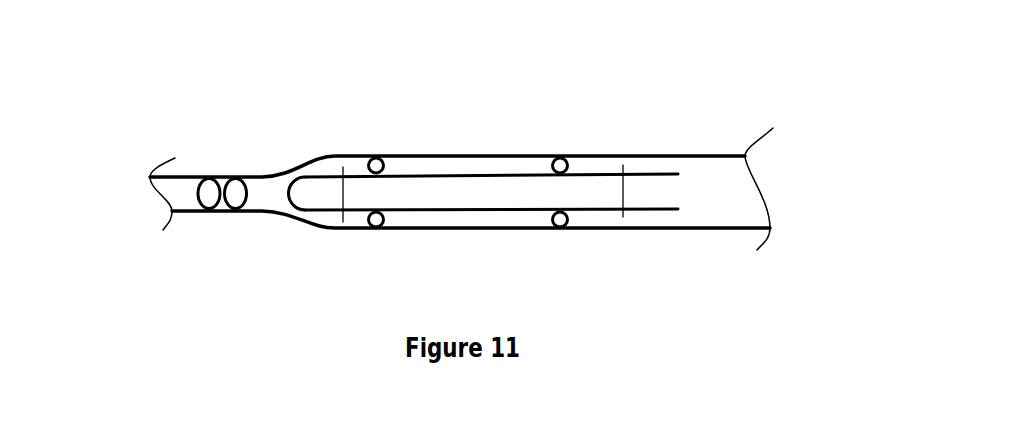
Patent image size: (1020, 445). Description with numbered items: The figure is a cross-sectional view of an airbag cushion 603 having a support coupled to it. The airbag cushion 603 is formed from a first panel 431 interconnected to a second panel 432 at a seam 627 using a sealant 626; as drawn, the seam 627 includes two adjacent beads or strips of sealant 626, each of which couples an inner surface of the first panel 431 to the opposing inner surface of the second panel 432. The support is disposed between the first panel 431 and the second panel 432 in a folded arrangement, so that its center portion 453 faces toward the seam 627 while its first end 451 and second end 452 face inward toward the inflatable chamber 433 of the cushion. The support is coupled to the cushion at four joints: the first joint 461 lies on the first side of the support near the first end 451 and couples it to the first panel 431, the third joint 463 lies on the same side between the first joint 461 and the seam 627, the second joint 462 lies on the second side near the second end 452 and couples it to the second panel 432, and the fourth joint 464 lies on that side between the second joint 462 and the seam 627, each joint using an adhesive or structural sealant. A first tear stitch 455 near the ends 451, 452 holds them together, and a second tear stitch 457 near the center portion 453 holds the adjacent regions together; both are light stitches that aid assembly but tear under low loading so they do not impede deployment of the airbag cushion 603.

The airbag cushion 603 is at (198, 93).
The first panel 431 is at (403, 156).
The second panel 432 is at (413, 230).
The inflatable chamber 433 is at (736, 201).
The first end of the support 451 is at (603, 173).
The second end of the support 452 is at (595, 211).
The center portion of the support 453 is at (266, 187).
The first tear stitch 455 is at (625, 193).
The second tear stitch 457 is at (338, 194).
The first joint 461 is at (557, 143).
The second joint 462 is at (557, 246).
The third joint 463 is at (377, 145).
The fourth joint 464 is at (374, 243).
The sealant 626 is at (237, 210).
The seam 627 is at (167, 263).